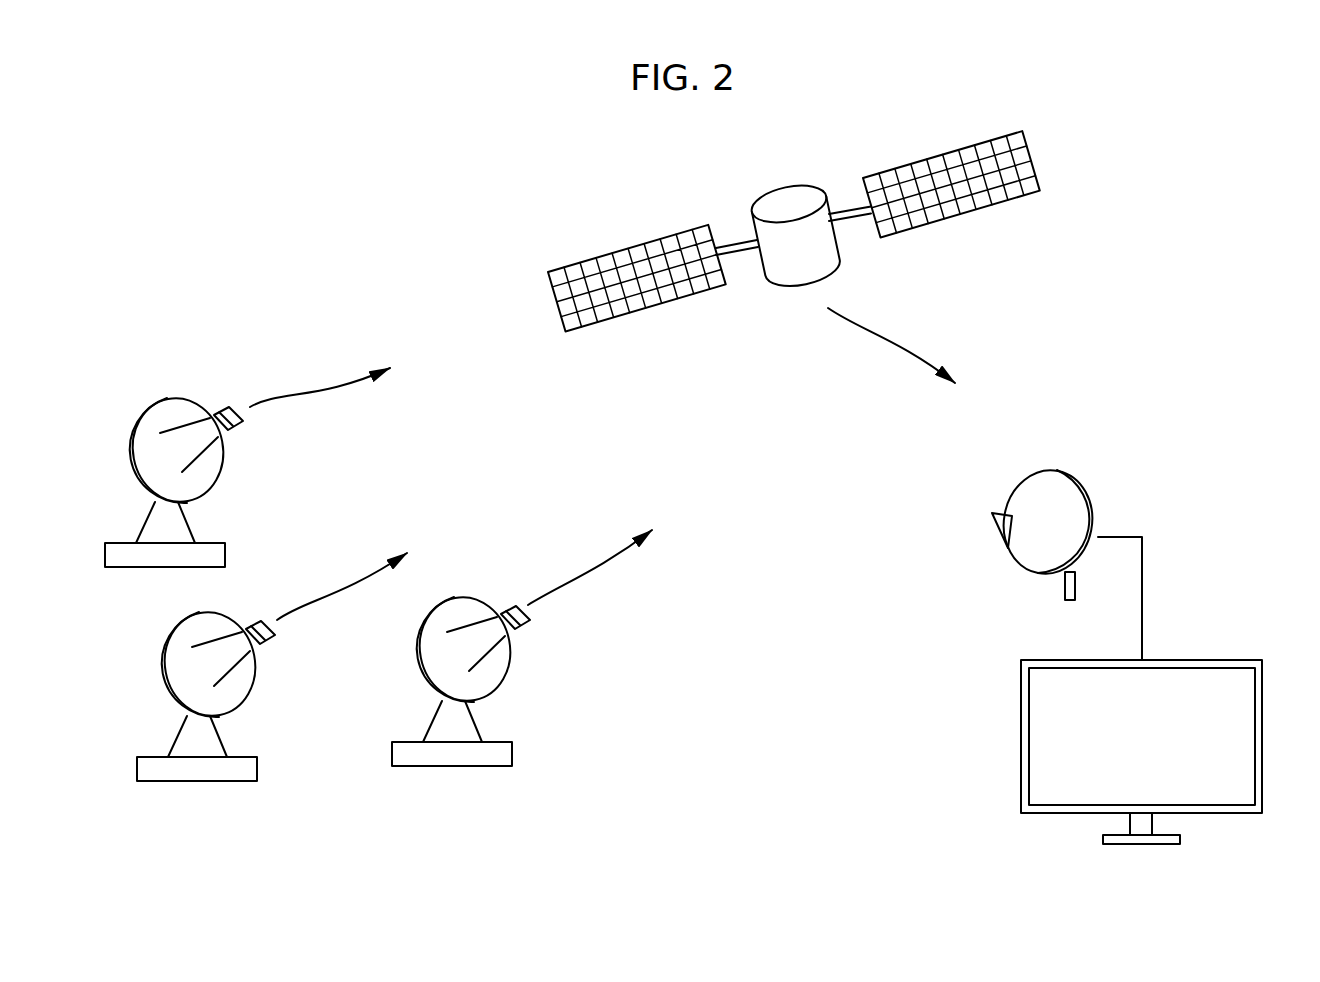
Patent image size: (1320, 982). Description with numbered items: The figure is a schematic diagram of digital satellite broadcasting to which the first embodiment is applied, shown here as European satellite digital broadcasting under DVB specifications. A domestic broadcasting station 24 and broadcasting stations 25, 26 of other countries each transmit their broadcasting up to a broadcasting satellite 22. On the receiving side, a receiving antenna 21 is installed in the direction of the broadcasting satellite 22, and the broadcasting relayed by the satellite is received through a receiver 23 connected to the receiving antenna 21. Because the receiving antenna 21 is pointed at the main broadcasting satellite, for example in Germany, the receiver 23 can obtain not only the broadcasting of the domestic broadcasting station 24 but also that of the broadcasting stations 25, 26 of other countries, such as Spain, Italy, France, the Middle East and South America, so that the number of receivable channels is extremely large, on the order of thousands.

The receiving antenna 21 is at (1038, 468).
The broadcasting satellite 22 is at (758, 197).
The receiver 23 is at (1200, 658).
The domestic broadcasting station 24 is at (470, 597).
The broadcasting station 25 is at (217, 611).
The broadcasting station 26 is at (166, 398).